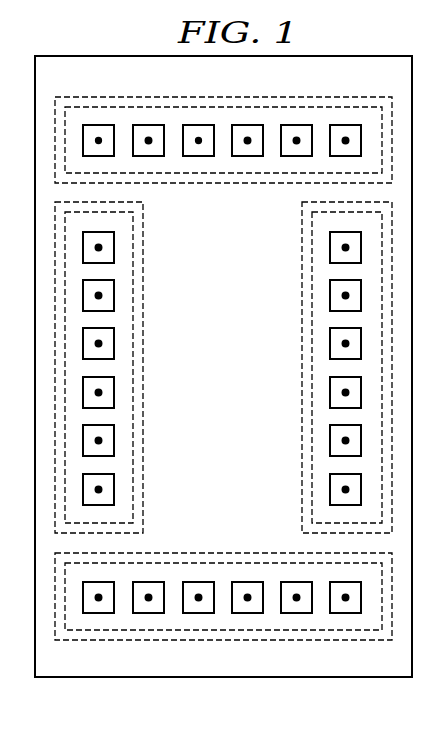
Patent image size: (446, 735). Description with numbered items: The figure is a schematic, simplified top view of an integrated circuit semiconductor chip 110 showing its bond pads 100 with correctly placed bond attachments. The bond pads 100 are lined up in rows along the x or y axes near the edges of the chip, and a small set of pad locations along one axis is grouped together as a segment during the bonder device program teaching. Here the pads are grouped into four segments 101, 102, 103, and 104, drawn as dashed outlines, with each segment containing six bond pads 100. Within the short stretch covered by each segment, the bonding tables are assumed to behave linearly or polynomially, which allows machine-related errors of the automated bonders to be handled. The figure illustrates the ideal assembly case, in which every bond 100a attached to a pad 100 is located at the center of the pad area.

The bond pads 100 is at (100, 125).
The bonds 100a is at (197, 139).
The segment 101 is at (143, 247).
The segment 102 is at (223, 149).
The segment 103 is at (300, 490).
The segment 104 is at (193, 553).
The semiconductor chip 110 is at (238, 382).